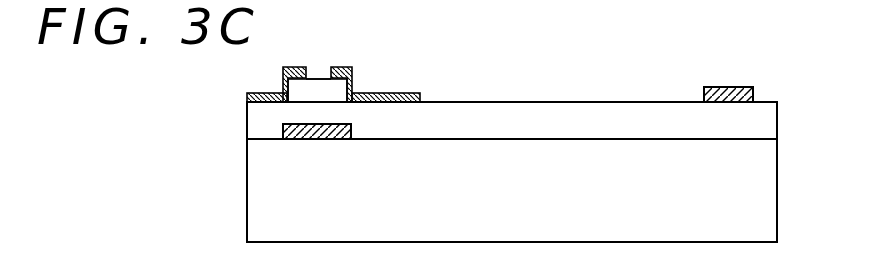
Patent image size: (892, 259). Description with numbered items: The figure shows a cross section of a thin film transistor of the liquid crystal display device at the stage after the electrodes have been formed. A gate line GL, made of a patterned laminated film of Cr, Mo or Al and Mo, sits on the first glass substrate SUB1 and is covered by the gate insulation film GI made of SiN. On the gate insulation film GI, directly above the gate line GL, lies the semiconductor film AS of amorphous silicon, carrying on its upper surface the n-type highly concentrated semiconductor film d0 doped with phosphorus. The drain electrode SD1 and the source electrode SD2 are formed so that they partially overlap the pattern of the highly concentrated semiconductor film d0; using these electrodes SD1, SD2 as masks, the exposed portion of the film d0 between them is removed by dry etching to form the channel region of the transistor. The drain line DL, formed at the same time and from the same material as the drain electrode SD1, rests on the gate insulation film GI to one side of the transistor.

The first glass substrate SUB1 is at (265, 225).
The gate insulation film GI is at (250, 129).
The gate line GL is at (283, 129).
The drain electrode SD1 is at (248, 101).
The source electrode SD2 is at (395, 97).
The semiconductor film AS is at (350, 93).
The highly concentrated semiconductor film d0 is at (328, 79).
The drain line DL is at (728, 85).